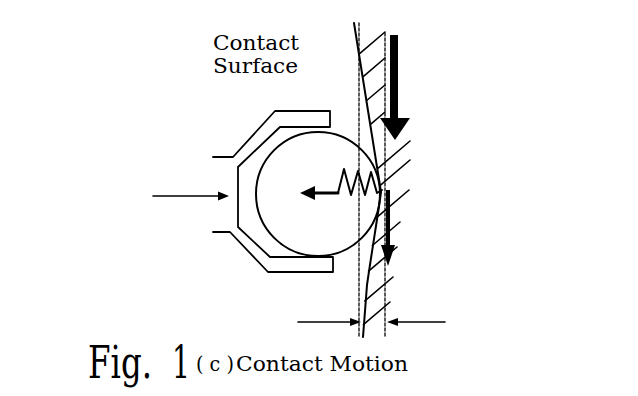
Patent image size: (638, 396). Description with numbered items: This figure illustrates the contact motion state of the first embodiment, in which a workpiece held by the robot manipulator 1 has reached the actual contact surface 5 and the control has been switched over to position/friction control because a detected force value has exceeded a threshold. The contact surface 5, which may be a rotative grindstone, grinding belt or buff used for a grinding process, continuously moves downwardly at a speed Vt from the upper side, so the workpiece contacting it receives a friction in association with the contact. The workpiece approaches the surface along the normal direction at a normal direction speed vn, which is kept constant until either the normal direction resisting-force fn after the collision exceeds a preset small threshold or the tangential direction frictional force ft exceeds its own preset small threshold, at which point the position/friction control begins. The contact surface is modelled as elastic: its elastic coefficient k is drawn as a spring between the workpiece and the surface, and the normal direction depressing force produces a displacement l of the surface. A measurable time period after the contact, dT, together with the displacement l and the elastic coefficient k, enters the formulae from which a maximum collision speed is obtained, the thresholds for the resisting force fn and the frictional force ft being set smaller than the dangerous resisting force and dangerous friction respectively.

The robot manipulator 1 is at (248, 252).
The contact surface 5 is at (416, 158).
The normal direction resisting-force fn is at (320, 187).
The normal direction speed vn is at (161, 206).
The elastic coefficient of the contact surface k is at (316, 248).
The displacement l is at (329, 299).
The tangential speed of the contact surface Vt is at (415, 87).
The tangential direction frictional force ft is at (413, 228).
The measurable time period after the contact dT is at (445, 326).